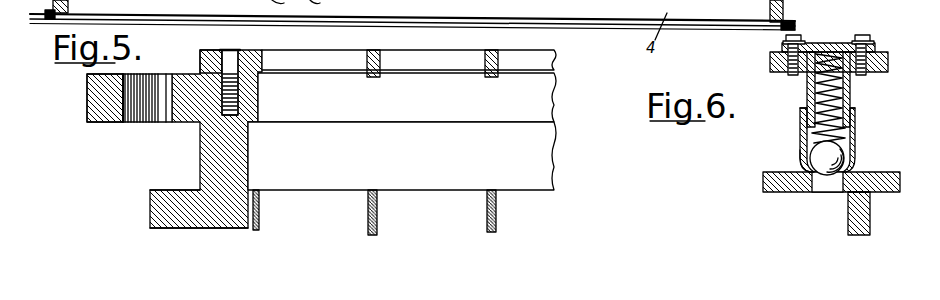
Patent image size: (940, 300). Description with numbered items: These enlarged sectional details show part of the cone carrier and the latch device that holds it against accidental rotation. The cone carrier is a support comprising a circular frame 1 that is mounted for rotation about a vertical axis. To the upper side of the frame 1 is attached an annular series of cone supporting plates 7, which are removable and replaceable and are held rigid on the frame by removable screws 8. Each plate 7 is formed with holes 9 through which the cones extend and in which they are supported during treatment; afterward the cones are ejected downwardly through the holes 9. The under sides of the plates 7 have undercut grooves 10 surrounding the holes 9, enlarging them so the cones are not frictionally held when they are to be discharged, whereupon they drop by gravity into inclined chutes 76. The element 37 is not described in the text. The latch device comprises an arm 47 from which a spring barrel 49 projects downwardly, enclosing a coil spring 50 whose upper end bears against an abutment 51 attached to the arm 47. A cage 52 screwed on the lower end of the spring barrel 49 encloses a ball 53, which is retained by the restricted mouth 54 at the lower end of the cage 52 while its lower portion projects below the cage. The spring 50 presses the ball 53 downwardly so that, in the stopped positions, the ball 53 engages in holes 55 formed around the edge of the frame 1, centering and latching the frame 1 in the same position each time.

In FIG. 5, the frame 1 is at (214, 152).
In FIG. 6, the frame 1 is at (865, 218).
In FIG. 5, the cone supporting plates 7 is at (212, 50).
In FIG. 5, the screws 8 is at (236, 51).
In FIG. 5, the holes 9 is at (328, 57).
In FIG. 5, the undercut grooves 10 is at (370, 74).
In FIG. 5, the foot flange 37 is at (163, 200).
In FIG. 5, the holes 55 is at (156, 114).
In FIG. 6, the holes 55 is at (829, 181).
In FIG. 5, the inclined chutes 76 is at (368, 201).
In FIG. 6, the arm 47 is at (888, 63).
In FIG. 6, the spring barrel 49 is at (850, 92).
In FIG. 6, the coil spring 50 is at (808, 97).
In FIG. 6, the abutment 51 is at (823, 44).
In FIG. 6, the cage 52 is at (855, 134).
In FIG. 6, the ball 53 is at (829, 159).
In FIG. 6, the restricted mouth 54 is at (803, 160).